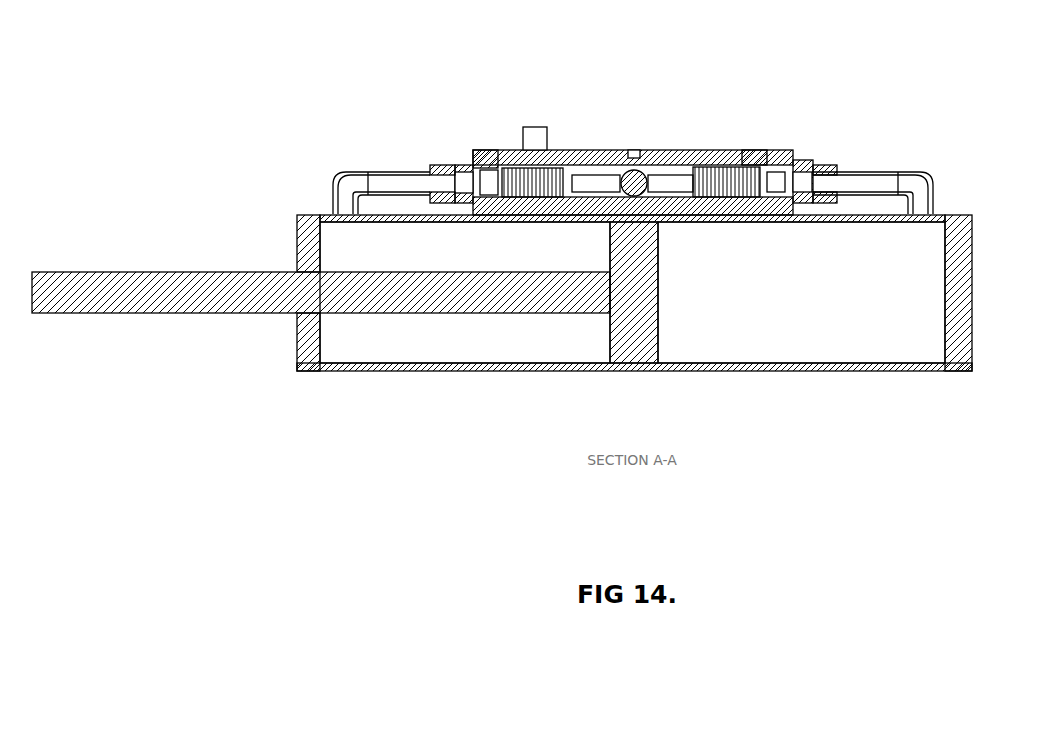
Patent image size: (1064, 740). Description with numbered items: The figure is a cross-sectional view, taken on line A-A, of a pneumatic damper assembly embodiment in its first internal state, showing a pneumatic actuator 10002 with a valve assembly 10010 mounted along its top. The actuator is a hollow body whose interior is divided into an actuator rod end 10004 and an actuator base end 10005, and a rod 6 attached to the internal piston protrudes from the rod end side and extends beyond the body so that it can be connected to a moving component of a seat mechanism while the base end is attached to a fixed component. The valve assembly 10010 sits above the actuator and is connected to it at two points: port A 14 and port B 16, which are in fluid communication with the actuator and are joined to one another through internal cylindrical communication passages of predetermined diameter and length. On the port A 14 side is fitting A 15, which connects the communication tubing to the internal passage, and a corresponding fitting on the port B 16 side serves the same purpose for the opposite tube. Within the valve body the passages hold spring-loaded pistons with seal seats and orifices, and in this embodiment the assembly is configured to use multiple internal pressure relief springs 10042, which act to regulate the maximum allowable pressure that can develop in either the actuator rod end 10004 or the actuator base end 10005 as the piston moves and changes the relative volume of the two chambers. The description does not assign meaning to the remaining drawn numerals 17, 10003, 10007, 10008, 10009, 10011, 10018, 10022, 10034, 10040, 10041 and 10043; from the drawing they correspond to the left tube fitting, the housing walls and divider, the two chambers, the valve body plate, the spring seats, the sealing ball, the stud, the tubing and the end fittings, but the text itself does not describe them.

The rod 6 is at (140, 265).
The port A 14 is at (923, 185).
The fitting A 15 is at (828, 157).
The port B 16 is at (342, 188).
The left tube fitting nut 17 is at (440, 163).
The pneumatic actuator 10002 is at (423, 380).
The housing bottom wall 10003 is at (472, 370).
The actuator rod end 10004 is at (285, 335).
The actuator base end 10005 is at (983, 312).
The divider wall 10007 is at (658, 303).
The left chamber 10008 is at (380, 338).
The right chamber 10009 is at (855, 323).
The valve assembly 10010 is at (636, 136).
The valve body plate 10011 is at (473, 147).
The right spring seat 10018 is at (687, 163).
The left spring seat 10022 is at (590, 163).
The ball 10034 is at (647, 170).
The stud 10040 is at (537, 118).
The tube 10041 is at (523, 127).
The internal pressure relief springs 10042 is at (503, 162).
The fitting 10043 is at (558, 158).